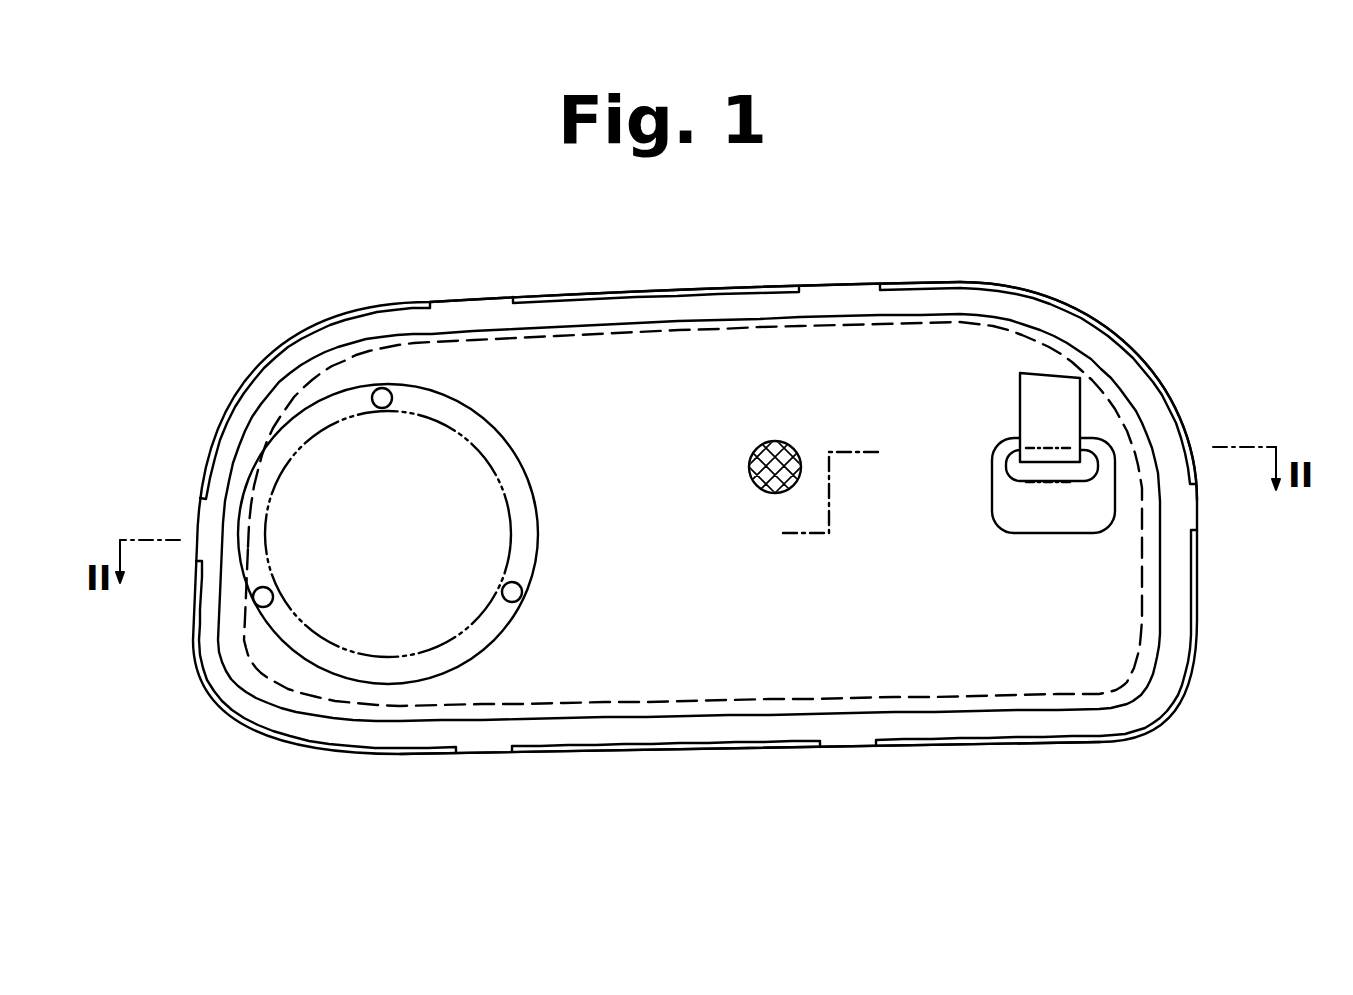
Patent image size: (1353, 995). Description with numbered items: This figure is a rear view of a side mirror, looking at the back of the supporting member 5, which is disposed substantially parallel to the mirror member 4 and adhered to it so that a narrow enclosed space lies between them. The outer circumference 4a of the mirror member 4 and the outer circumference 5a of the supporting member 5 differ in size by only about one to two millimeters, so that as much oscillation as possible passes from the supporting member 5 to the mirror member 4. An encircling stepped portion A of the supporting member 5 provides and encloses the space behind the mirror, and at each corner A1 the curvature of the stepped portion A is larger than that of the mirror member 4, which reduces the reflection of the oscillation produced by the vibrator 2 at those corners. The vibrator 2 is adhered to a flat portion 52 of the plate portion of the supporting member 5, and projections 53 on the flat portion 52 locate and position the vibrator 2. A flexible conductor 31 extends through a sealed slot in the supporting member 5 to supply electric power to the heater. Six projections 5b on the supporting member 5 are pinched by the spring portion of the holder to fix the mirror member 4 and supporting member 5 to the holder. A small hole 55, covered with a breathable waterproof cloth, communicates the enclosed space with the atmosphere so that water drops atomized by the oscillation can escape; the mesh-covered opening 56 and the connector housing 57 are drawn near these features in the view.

The vibrator 2 is at (374, 668).
The mirror member 4 is at (1183, 688).
The outer circumference of the mirror member 4a is at (988, 283).
The supporting member 5 is at (1030, 748).
The outer circumference of the supporting member 5a is at (1082, 302).
The projections 5b is at (473, 300).
The flexible conductor 31 is at (1075, 412).
The flat portion 52 is at (303, 460).
The projections 53 is at (380, 388).
The small hole 55 is at (752, 455).
The mesh 56 is at (778, 441).
The connector housing 57 is at (1045, 517).
The stepped portion A is at (923, 316).
The corner A1 is at (288, 377).